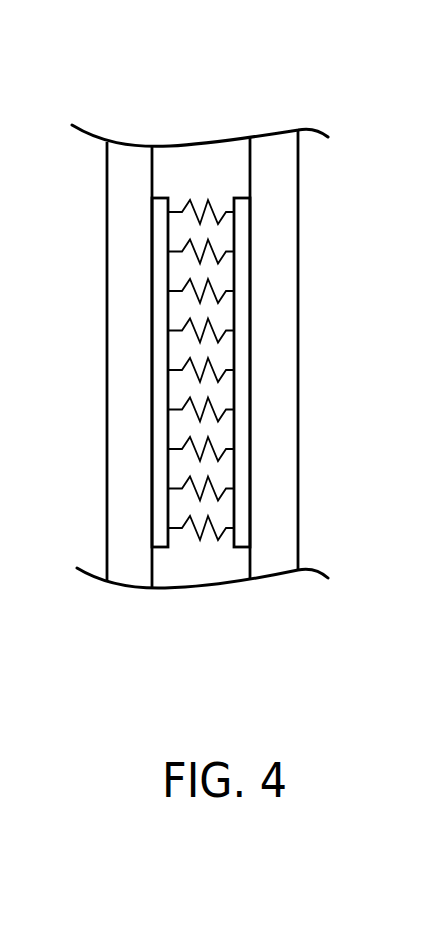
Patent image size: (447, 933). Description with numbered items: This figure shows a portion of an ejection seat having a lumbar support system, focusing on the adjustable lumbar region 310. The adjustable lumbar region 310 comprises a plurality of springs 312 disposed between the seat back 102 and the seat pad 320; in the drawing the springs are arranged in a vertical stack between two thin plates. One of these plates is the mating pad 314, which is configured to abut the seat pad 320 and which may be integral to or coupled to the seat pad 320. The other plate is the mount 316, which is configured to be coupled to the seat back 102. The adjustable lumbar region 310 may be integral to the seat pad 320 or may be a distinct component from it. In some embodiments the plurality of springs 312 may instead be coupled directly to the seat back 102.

The adjustable lumbar region 310 is at (207, 114).
The plurality of springs 312 is at (196, 194).
The seat back 102 is at (282, 270).
The seat pad 320 is at (143, 324).
The mating pad 314 is at (165, 422).
The mount 316 is at (243, 420).